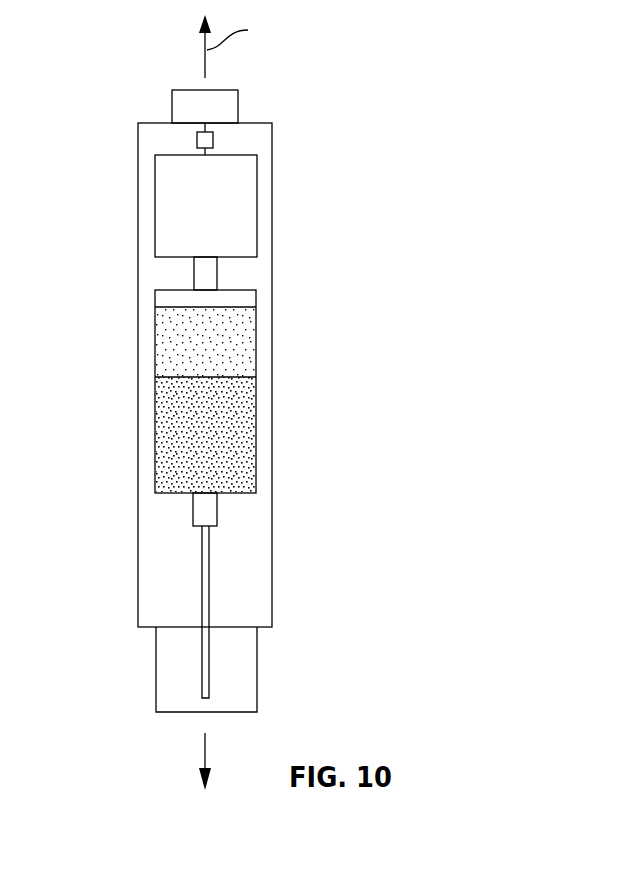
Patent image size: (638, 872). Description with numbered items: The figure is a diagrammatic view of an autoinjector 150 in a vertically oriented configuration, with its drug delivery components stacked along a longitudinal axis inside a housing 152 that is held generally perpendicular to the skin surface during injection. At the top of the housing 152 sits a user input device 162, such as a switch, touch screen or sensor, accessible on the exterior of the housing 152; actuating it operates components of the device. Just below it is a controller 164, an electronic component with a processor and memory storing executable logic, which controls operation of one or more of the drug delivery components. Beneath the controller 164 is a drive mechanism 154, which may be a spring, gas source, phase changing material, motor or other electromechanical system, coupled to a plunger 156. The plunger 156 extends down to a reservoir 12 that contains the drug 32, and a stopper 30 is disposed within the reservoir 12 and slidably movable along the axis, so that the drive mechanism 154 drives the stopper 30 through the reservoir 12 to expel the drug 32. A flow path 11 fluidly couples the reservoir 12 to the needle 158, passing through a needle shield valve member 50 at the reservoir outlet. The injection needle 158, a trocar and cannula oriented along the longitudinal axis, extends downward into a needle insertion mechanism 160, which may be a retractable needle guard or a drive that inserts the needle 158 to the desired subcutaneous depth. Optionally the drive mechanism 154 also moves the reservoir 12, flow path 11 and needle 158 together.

The autoinjector 150 is at (413, 64).
The housing 152 is at (138, 230).
The user input device 162 is at (172, 107).
The controller 164 is at (213, 142).
The drive mechanism 154 is at (257, 197).
The plunger 156 is at (217, 265).
The flow path 11 is at (306, 333).
The reservoir 12 is at (256, 423).
The stopper 30 is at (168, 335).
The drug 32 is at (215, 439).
The needle shield valve member 50 is at (193, 510).
The injection needle 158 is at (209, 537).
The needle insertion mechanism 160 is at (156, 665).